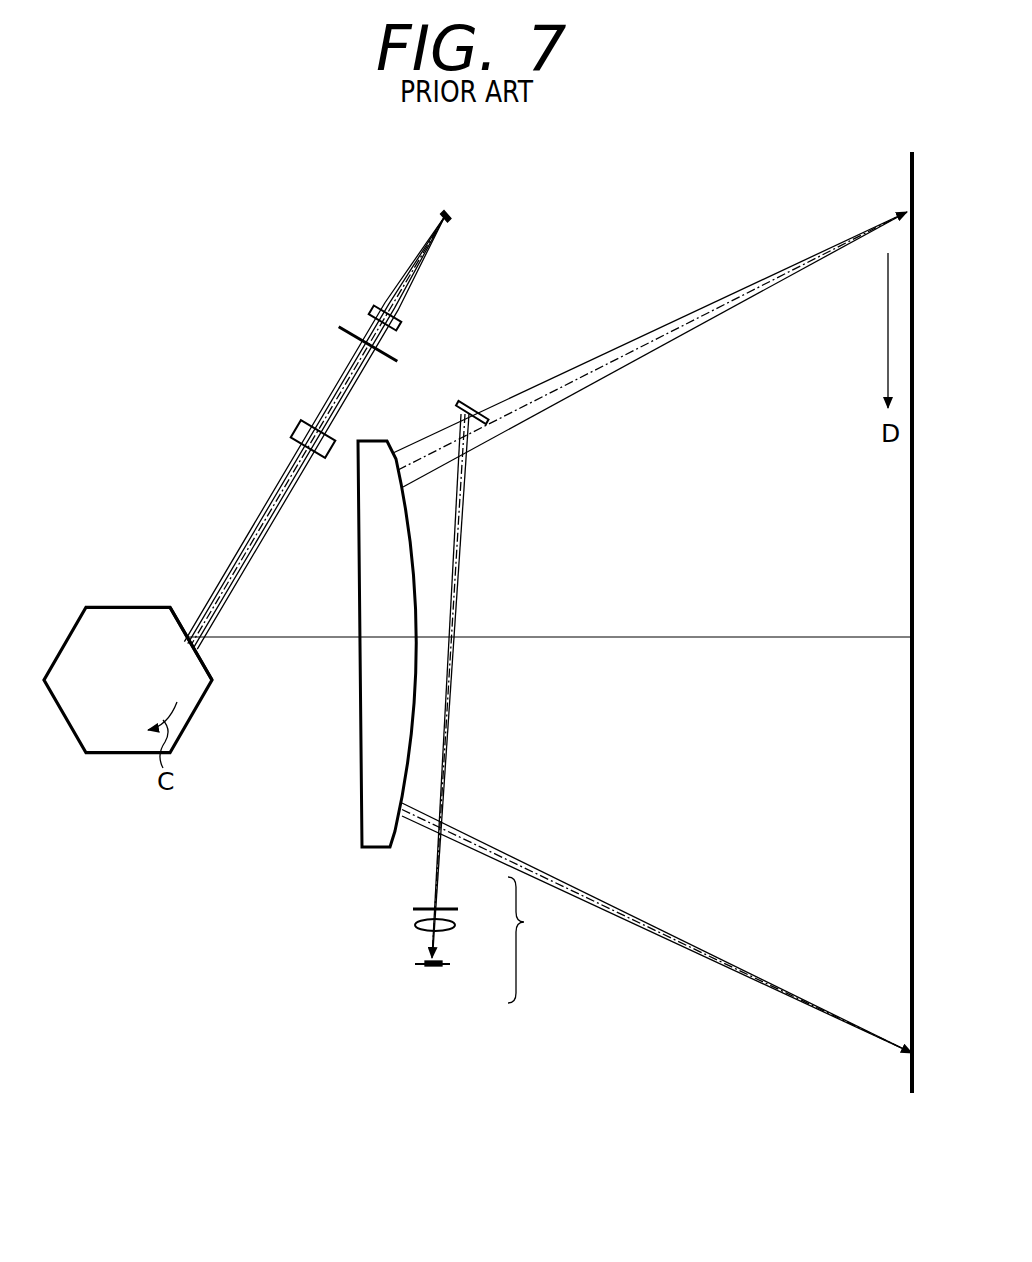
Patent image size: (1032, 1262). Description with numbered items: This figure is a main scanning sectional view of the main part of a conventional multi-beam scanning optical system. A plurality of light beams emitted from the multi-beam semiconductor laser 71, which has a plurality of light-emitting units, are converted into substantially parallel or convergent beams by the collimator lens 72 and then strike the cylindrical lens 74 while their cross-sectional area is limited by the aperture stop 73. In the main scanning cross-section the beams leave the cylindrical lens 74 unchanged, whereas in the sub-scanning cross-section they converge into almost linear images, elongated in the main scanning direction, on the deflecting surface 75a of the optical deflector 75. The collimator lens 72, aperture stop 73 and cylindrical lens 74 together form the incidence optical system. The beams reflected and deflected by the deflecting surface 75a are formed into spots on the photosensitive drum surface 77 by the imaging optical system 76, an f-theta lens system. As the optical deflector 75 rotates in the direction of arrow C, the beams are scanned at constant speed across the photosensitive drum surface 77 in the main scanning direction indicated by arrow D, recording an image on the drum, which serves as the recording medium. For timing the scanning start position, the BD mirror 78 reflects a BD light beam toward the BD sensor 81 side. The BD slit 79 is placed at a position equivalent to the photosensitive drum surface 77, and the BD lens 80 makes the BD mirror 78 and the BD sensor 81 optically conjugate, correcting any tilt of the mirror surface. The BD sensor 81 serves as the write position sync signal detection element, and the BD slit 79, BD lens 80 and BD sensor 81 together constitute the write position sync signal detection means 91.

The multi-beam semiconductor laser 71 is at (455, 211).
The collimator lens 72 is at (370, 310).
The aperture stop 73 is at (344, 331).
The cylindrical lens 74 is at (294, 426).
The optical deflector 75 is at (108, 615).
The deflecting surface 75a is at (187, 613).
The imaging optical system 76 is at (372, 443).
The photosensitive drum surface 77 is at (909, 164).
The BD mirror 78 is at (482, 413).
The BD slit 79 is at (445, 906).
The BD lens 80 is at (452, 928).
The BD sensor 81 is at (446, 966).
The write position sync signal detection means 91 is at (534, 940).